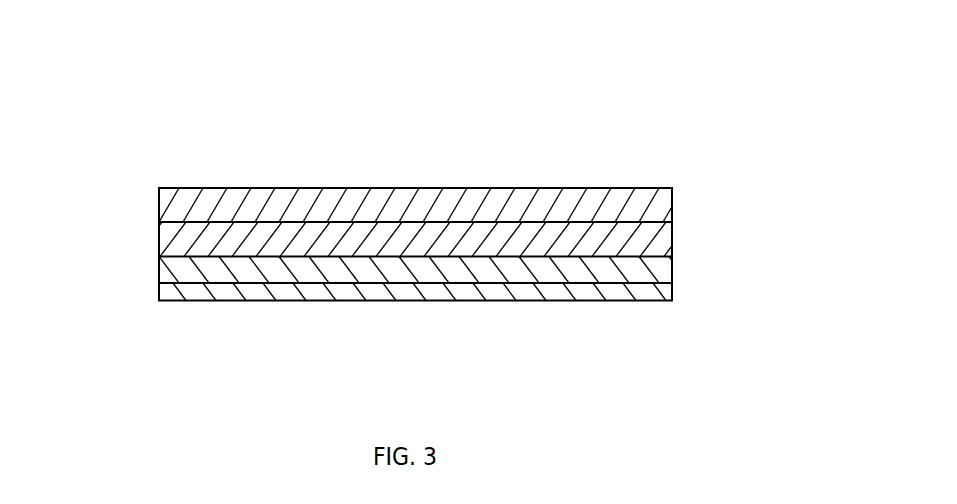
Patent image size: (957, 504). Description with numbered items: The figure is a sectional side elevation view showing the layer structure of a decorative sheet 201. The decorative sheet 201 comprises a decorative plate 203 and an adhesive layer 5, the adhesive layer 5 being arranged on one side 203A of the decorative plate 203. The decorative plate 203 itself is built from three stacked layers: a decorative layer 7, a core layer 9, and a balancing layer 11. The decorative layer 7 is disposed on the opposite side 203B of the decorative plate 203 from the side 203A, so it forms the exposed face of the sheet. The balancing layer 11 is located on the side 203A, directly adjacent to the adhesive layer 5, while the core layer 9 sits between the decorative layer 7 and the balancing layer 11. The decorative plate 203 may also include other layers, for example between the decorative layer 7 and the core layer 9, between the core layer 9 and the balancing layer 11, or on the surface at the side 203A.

The decorative sheet 201 is at (623, 113).
The decorative plate 203 is at (828, 188).
The one side of the decorative plate 203A is at (148, 283).
The opposite side of the decorative plate 203B is at (148, 188).
The decorative layer 7 is at (638, 200).
The core layer 9 is at (640, 240).
The balancing layer 11 is at (640, 275).
The adhesive layer 5 is at (640, 292).